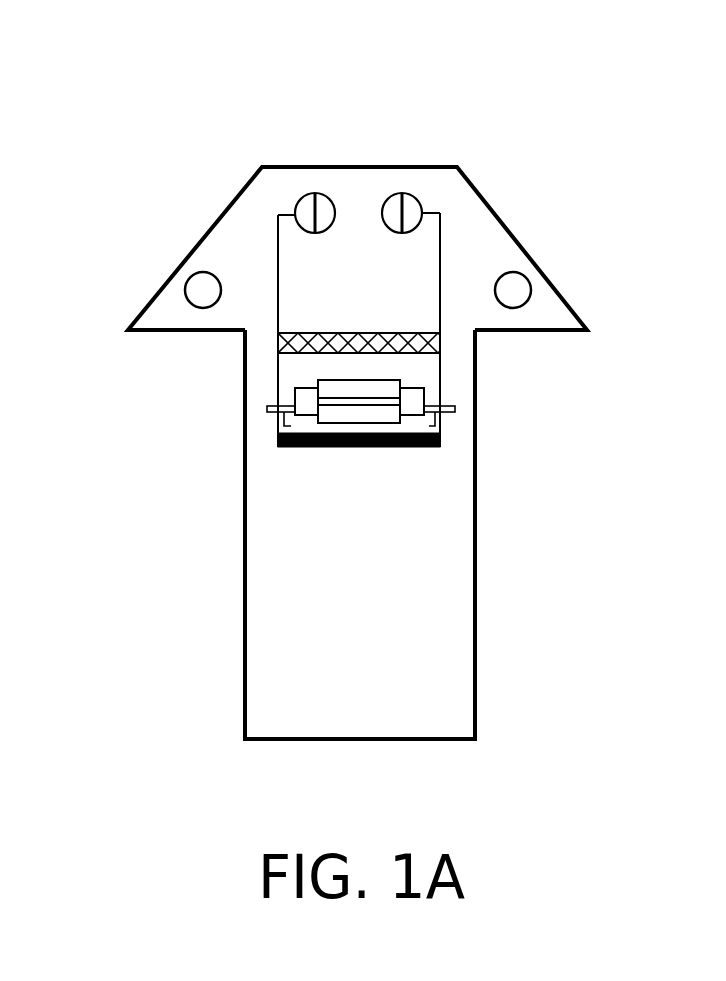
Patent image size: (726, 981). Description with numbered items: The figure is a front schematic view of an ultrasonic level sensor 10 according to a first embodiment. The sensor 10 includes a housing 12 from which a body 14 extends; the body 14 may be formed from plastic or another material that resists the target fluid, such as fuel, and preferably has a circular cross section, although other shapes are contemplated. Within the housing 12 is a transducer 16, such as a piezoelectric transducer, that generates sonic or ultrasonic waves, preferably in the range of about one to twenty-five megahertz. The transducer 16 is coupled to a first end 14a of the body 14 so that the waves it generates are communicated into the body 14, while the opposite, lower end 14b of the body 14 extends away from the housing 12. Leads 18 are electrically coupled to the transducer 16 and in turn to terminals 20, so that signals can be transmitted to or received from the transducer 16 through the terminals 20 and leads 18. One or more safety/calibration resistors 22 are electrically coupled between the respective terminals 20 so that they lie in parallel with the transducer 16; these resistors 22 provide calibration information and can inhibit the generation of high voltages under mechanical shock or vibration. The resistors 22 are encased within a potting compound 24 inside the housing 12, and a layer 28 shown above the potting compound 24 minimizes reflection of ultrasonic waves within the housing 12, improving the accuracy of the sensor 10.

The sensor 10 is at (553, 145).
The housing 12 is at (208, 230).
The body 14 is at (453, 672).
The first end 14a is at (338, 453).
The lower end of stem 14b is at (432, 742).
The transducer 16 is at (405, 447).
The leads 18 is at (422, 212).
The terminals 20 is at (300, 200).
The safety/calibration resistors 22 is at (400, 378).
The potting compound 24 is at (420, 363).
The seal 28 is at (382, 330).